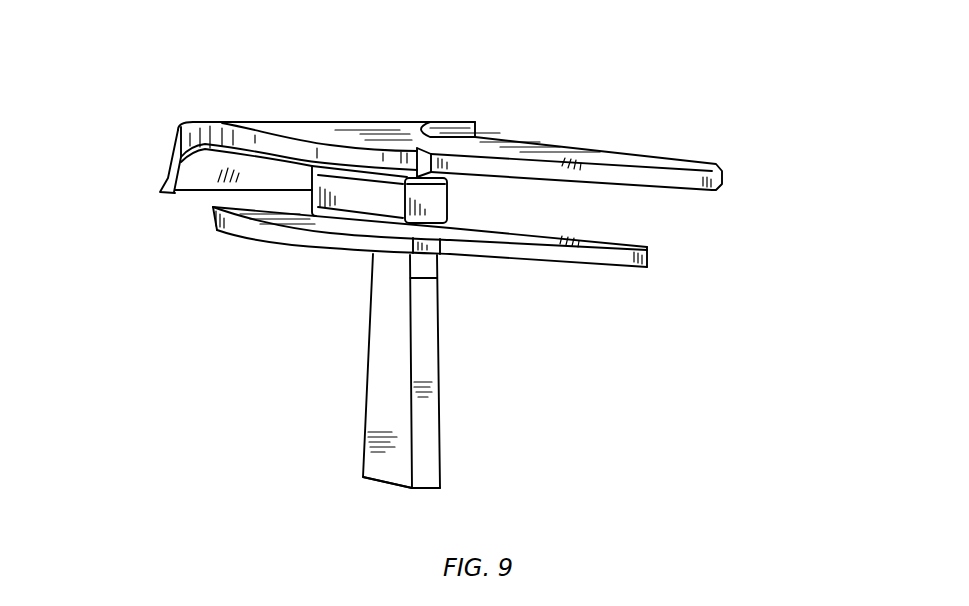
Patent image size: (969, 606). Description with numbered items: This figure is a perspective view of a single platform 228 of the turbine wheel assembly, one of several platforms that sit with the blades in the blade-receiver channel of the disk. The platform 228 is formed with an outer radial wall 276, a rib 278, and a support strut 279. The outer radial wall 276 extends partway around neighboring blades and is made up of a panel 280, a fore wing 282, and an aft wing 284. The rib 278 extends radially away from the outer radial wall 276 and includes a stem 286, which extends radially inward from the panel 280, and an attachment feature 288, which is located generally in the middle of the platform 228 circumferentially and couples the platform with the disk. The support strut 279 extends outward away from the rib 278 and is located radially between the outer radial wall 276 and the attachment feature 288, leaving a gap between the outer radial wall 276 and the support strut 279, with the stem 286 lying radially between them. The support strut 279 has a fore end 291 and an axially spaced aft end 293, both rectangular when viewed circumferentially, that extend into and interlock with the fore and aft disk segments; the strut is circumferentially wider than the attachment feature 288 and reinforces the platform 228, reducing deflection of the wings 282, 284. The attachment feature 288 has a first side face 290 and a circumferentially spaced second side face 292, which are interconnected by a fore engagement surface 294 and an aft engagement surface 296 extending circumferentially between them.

The platform 228 is at (596, 60).
The outer radial wall 276 is at (267, 111).
The rib 278 is at (367, 402).
The support strut 279 is at (227, 240).
The panel 280 is at (442, 136).
The fore wing 282 is at (160, 172).
The aft wing 284 is at (730, 183).
The stem 286 is at (422, 205).
The attachment feature 288 is at (371, 330).
The first side face 290 is at (387, 476).
The fore end 291 is at (212, 220).
The second side face 292 is at (440, 438).
The aft end 293 is at (602, 266).
The fore engagement surface 294 is at (362, 443).
The aft engagement surface 296 is at (430, 478).